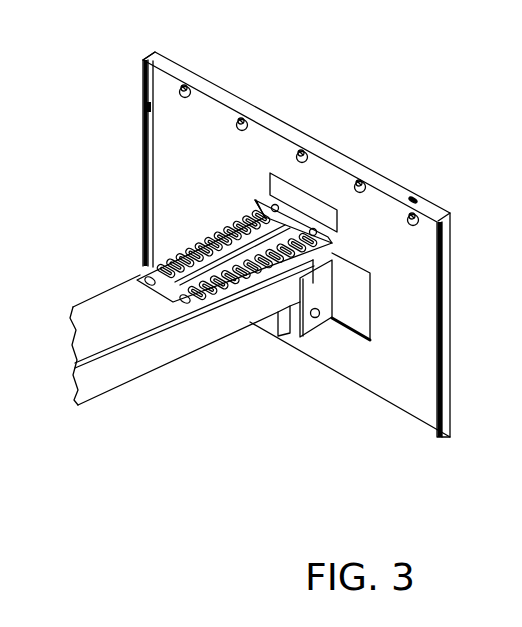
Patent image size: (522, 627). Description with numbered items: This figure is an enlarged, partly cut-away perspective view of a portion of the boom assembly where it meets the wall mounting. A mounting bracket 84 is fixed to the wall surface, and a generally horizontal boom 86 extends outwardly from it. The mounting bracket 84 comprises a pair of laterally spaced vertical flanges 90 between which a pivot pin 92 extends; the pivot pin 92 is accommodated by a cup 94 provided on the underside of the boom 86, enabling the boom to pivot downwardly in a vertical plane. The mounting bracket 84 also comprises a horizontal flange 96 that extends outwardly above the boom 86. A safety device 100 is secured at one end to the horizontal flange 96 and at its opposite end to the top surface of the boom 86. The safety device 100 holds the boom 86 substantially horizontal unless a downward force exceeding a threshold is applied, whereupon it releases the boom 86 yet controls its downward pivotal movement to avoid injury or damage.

The mounting bracket 84 is at (208, 127).
The boom 86 is at (112, 312).
The vertical flanges 90 is at (338, 272).
The pivot pin 92 is at (333, 309).
The cup 94 is at (283, 337).
The horizontal flange 96 is at (328, 242).
The safety device 100 is at (186, 218).